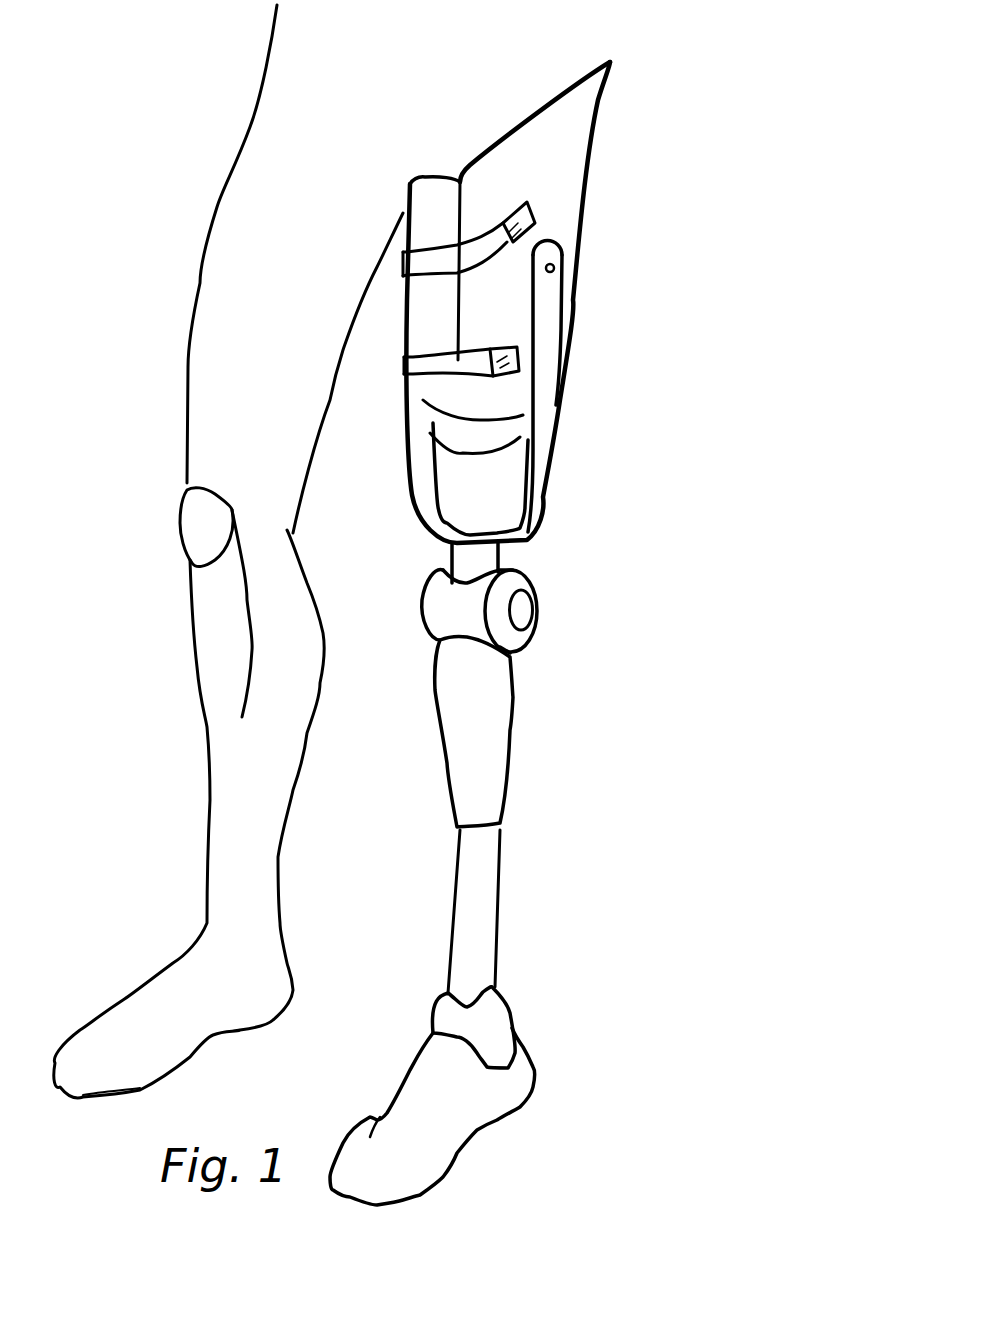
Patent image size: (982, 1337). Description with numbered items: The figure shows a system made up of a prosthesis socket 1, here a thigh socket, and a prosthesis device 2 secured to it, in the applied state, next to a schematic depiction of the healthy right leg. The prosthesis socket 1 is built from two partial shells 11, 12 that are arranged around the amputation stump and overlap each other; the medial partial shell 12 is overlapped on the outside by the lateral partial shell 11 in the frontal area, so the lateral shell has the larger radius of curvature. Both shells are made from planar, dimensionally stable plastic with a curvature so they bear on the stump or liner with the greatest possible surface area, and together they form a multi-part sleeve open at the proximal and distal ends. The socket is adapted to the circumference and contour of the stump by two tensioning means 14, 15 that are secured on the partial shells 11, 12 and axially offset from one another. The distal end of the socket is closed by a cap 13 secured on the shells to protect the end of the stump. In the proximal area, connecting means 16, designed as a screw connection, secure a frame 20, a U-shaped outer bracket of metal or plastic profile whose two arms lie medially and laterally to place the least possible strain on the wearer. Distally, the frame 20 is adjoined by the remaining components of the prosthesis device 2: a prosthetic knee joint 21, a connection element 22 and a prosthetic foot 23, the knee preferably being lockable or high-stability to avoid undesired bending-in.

The prosthesis socket 1 is at (628, 176).
The prosthesis device 2 is at (603, 618).
The lateral partial shell 11 is at (573, 130).
The medial partial shell 12 is at (430, 197).
The cap 13 is at (495, 433).
The tensioning means 14 is at (420, 267).
The tensioning means 15 is at (413, 367).
The connecting means 16 is at (565, 262).
The frame 20 is at (542, 427).
The prosthetic knee joint 21 is at (520, 637).
The connection element 22 is at (497, 783).
The prosthetic foot 23 is at (513, 1077).